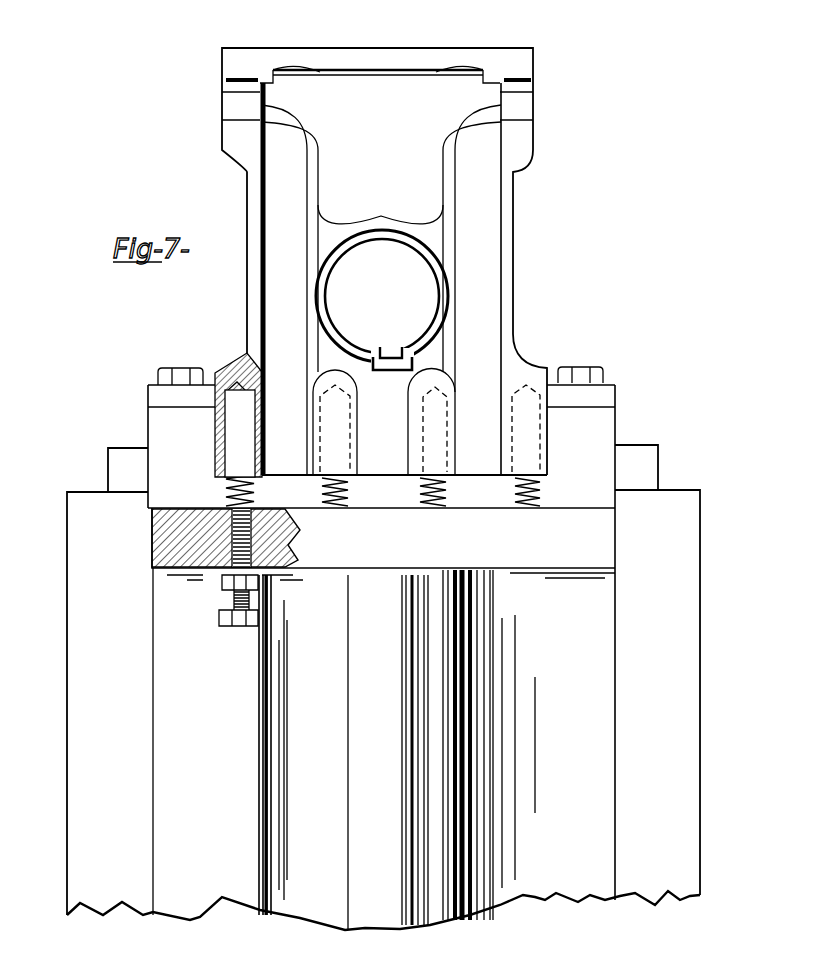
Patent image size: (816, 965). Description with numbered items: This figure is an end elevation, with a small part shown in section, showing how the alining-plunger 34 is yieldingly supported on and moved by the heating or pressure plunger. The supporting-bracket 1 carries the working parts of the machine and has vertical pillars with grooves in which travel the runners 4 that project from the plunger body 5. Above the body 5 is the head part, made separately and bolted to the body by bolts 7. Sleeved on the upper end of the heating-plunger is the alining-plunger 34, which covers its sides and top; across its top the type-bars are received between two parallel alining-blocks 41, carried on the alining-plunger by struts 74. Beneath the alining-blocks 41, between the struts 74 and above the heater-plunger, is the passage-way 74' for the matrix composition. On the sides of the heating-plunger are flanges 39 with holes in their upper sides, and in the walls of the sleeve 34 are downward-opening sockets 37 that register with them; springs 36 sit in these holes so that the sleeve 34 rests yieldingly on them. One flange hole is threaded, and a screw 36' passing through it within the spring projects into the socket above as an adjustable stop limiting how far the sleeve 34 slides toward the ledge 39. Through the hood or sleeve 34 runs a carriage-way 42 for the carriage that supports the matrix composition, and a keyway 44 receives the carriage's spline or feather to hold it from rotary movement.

The supporting-bracket 1 is at (83, 670).
The runner 4 is at (112, 468).
The body 5 is at (533, 713).
The bolts 7 is at (181, 378).
The alining-plunger 34 is at (492, 262).
The springs 36 is at (346, 444).
The screw 36' is at (212, 600).
The holes or sockets 37 is at (213, 430).
The flanges 39 is at (383, 538).
The alining-blocks 41 is at (433, 53).
The carriage-way 42 is at (395, 263).
The keyway 44 is at (391, 352).
The struts 74 is at (470, 45).
The passage-way 74' is at (313, 45).